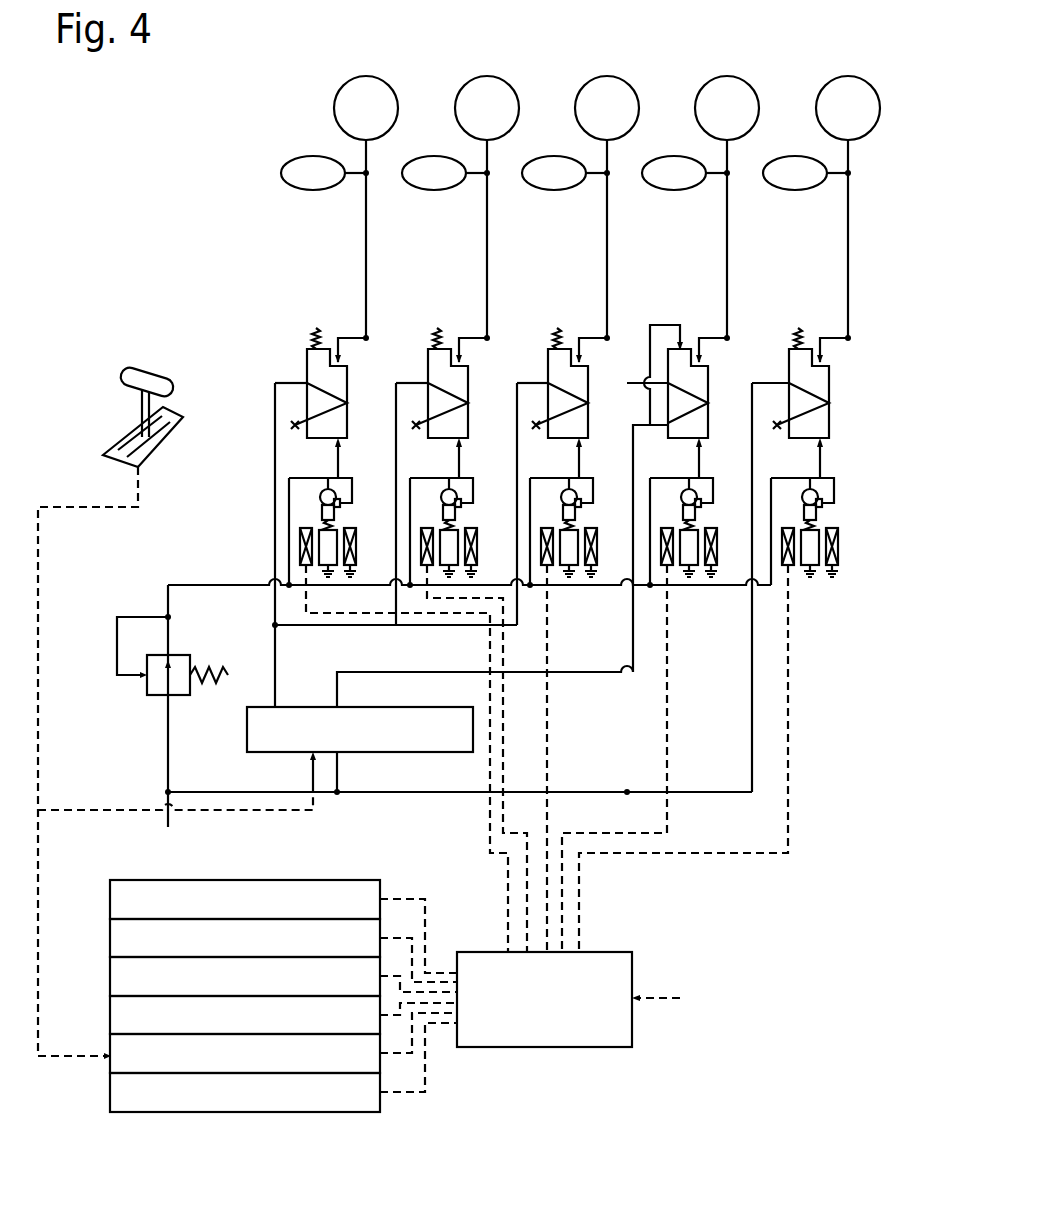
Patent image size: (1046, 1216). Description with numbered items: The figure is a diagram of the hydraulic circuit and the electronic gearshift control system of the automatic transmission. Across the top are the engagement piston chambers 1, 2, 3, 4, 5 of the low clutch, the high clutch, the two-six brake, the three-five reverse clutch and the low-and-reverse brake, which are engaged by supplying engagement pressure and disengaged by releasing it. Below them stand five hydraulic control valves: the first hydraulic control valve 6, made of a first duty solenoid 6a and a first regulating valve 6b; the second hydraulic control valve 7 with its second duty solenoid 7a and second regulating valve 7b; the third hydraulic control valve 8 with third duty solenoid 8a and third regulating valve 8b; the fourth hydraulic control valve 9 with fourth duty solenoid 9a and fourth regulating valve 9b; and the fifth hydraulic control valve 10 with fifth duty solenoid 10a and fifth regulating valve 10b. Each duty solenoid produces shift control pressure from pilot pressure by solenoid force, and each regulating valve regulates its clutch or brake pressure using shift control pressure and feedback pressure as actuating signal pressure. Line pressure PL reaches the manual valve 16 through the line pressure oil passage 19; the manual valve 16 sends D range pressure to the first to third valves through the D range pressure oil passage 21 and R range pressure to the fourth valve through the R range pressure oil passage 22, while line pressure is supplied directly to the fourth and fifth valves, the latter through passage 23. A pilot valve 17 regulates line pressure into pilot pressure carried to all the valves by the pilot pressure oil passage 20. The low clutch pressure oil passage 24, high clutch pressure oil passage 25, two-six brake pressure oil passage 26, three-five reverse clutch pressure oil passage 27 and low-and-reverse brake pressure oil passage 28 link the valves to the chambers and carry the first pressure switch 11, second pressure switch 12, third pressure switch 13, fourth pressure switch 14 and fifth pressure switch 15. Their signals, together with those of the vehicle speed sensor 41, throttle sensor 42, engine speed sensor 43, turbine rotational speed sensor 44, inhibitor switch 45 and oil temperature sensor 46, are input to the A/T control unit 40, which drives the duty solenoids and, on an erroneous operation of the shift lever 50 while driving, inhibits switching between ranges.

The engagement piston chamber 1 is at (380, 81).
The engagement piston chamber 2 is at (501, 81).
The engagement piston chamber 3 is at (621, 81).
The engagement piston chamber 4 is at (741, 81).
The engagement piston chamber 5 is at (862, 81).
The first hydraulic control valve 6 is at (335, 323).
The first duty solenoid 6a is at (323, 488).
The first regulating valve 6b is at (305, 368).
The second hydraulic control valve 7 is at (456, 323).
The second duty solenoid 7a is at (444, 488).
The second regulating valve 7b is at (426, 368).
The third hydraulic control valve 8 is at (576, 323).
The third duty solenoid 8a is at (565, 488).
The third regulating valve 8b is at (547, 368).
The fourth hydraulic control valve 9 is at (655, 322).
The fourth duty solenoid 9a is at (685, 488).
The fourth regulating valve 9b is at (690, 333).
The fifth hydraulic control valve 10 is at (790, 323).
The fifth duty solenoid 10a is at (806, 488).
The fifth regulating valve 10b is at (784, 368).
The first pressure switch 11 is at (306, 156).
The second pressure switch 12 is at (427, 156).
The third pressure switch 13 is at (547, 156).
The fourth pressure switch 14 is at (667, 156).
The fifth pressure switch 15 is at (788, 156).
The manual valve 16 is at (423, 707).
The pilot valve 17 is at (152, 702).
The line pressure oil passage 19 is at (300, 792).
The pilot pressure oil passage 20 is at (228, 588).
The D range pressure oil passage 21 is at (452, 628).
The R range pressure oil passage 22 is at (580, 672).
The line pressure passage to low and reverse brake valve 23 is at (750, 650).
The low clutch pressure oil passage 24 is at (369, 226).
The high clutch pressure oil passage 25 is at (490, 226).
The 2-6 brake pressure oil passage 26 is at (610, 226).
The 3-5 reverse clutch pressure oil passage 27 is at (730, 226).
The low-and-reverse brake pressure oil passage 28 is at (848, 228).
The A/T control unit 40 is at (618, 952).
The vehicle speed sensor 41 is at (110, 899).
The throttle sensor 42 is at (110, 938).
The engine speed sensor 43 is at (110, 976).
The turbine rotational speed sensor 44 is at (110, 1015).
The inhibitor switch 45 is at (110, 1051).
The oil temperature sensor 46 is at (110, 1092).
The shift lever 50 is at (150, 368).